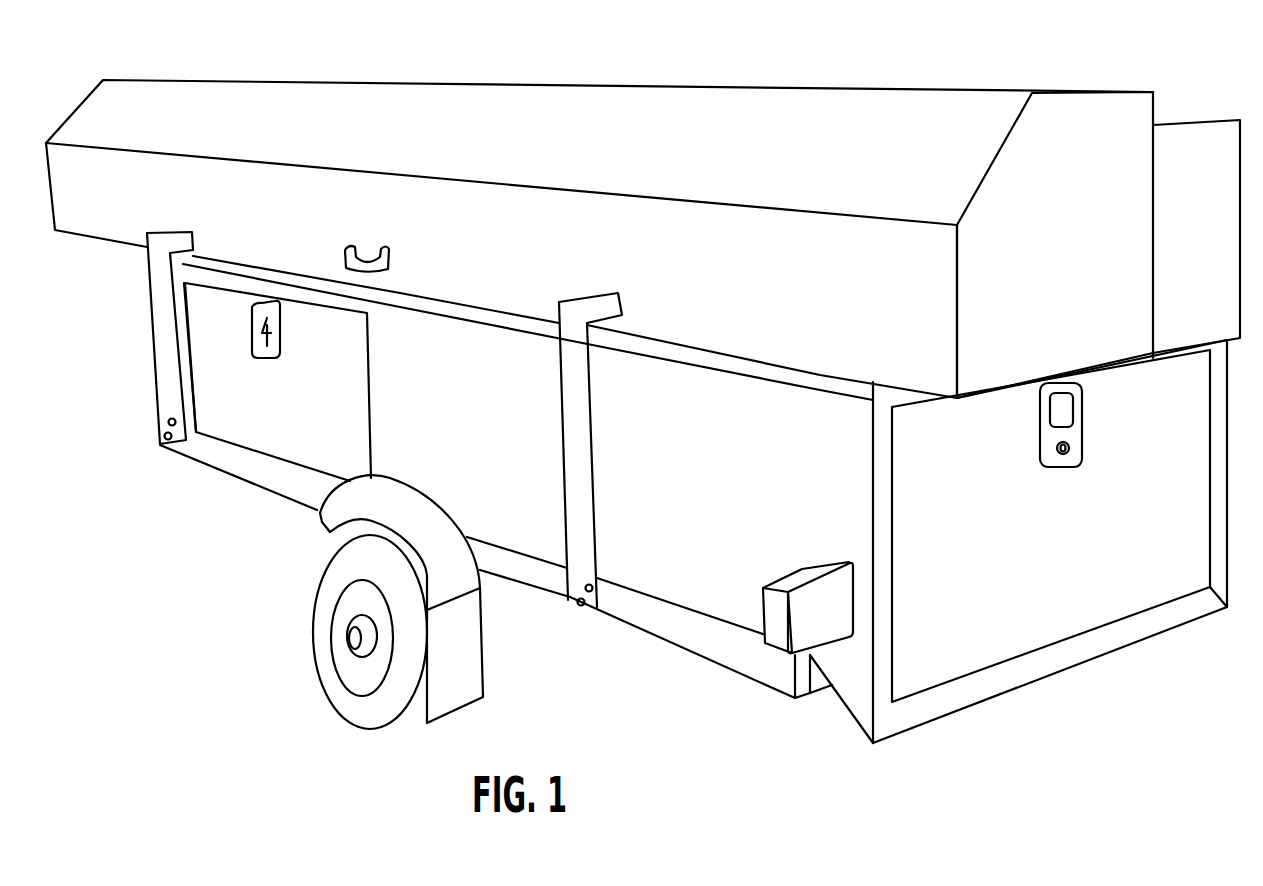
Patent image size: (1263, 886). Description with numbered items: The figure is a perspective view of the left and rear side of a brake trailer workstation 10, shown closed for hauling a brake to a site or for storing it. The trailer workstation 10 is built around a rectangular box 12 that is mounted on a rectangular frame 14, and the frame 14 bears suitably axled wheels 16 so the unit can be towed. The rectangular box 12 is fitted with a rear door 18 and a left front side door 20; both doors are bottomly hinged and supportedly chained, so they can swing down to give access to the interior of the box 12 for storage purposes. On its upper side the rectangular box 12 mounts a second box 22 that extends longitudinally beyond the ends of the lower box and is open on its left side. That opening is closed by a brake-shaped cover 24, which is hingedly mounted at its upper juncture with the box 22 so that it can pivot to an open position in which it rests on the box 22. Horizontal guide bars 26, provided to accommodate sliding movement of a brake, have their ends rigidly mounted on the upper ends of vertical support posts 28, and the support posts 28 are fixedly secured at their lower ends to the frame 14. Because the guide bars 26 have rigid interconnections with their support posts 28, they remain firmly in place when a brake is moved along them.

The brake trailer workstation 10 is at (563, 82).
The rectangular box 12 is at (471, 418).
The rectangular frame 14 is at (647, 620).
The wheels 16 is at (345, 622).
The rear door 18 is at (1082, 546).
The left front side door 20 is at (266, 394).
The box 22 is at (1208, 276).
The brake-shaped cover 24 is at (1071, 259).
The horizontal guide bars 26 is at (167, 242).
The vertical support posts 28 is at (163, 359).